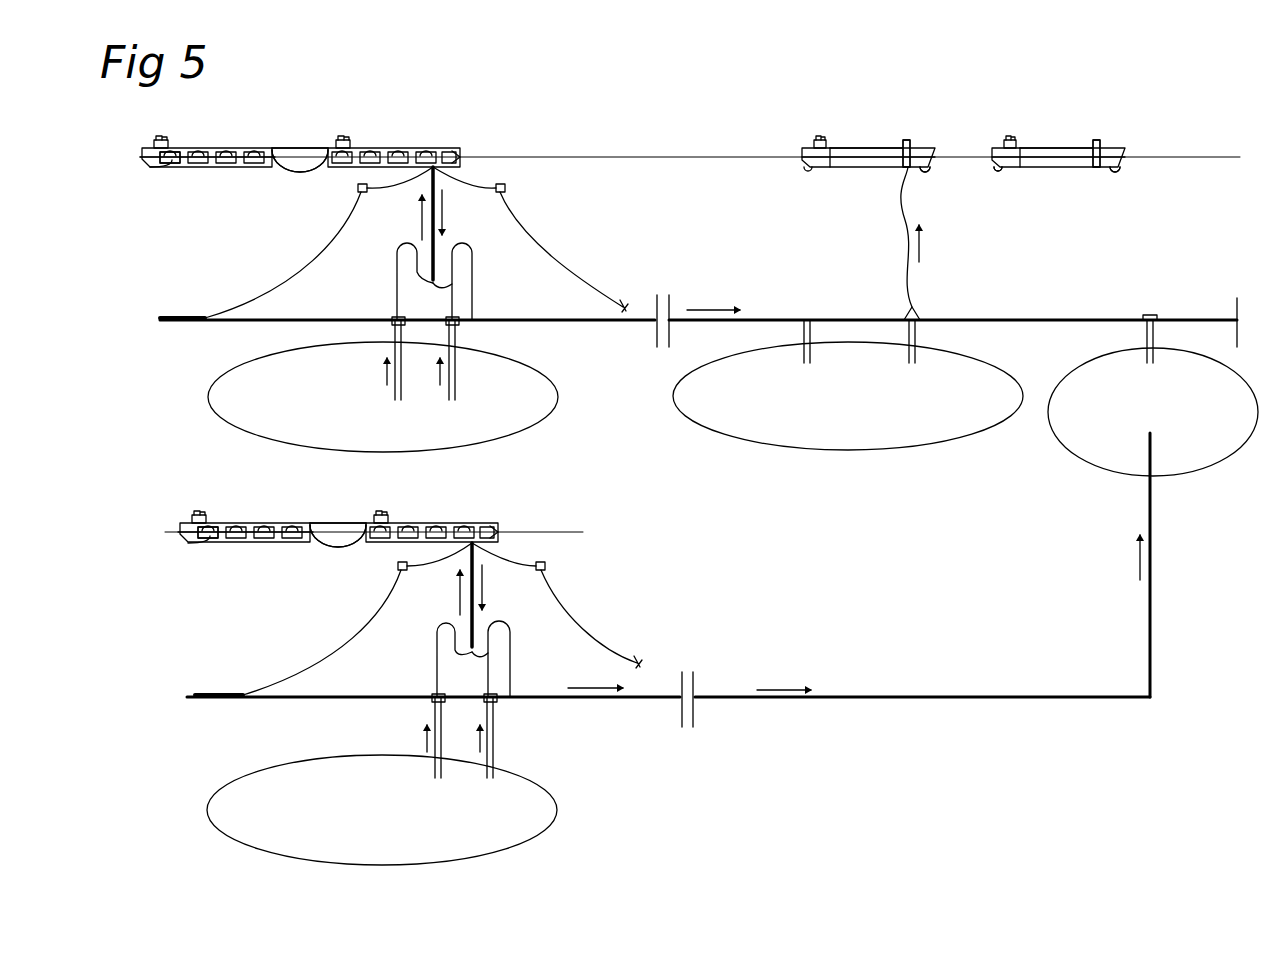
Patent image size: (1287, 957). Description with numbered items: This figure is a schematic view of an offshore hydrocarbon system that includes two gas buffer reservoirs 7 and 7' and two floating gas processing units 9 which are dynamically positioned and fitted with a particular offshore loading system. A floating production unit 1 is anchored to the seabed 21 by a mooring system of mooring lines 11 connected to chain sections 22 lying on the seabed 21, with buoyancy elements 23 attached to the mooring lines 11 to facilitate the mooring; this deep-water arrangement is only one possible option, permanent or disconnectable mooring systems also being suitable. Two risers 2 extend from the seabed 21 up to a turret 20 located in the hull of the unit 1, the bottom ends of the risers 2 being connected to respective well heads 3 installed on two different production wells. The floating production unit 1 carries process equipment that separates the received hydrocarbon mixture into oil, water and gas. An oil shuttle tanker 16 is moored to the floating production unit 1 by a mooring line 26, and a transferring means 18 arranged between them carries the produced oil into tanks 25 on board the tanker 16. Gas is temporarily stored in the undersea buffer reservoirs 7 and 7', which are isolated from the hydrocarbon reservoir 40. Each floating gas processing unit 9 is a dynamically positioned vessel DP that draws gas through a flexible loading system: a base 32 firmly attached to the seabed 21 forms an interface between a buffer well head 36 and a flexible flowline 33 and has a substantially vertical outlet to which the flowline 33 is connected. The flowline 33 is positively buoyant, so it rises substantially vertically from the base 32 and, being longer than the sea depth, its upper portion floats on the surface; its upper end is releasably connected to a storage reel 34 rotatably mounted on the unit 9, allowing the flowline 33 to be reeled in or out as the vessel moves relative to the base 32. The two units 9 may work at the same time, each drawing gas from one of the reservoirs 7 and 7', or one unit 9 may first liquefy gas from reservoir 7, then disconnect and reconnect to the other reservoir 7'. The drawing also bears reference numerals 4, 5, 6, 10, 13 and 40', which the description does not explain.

The floating production unit 1 is at (385, 132).
The riser 2 is at (396, 262).
The well head 3 is at (392, 318).
The hydrocarbon flow 4 is at (420, 220).
The pipeline 5 is at (474, 266).
The return flow 6 is at (444, 218).
The gas buffer reservoir 7 is at (848, 390).
The second gas buffer reservoir 7' is at (1153, 419).
The floating gas processing unit 9 is at (868, 135).
The flow direction 10 is at (921, 250).
The mooring line 11 is at (495, 176).
The hull 13 is at (877, 150).
The oil shuttle tanker 16 is at (193, 148).
The transferring means 18 is at (296, 173).
The turret 20 is at (436, 162).
The seabed 21 is at (335, 318).
The chain section 22 is at (188, 316).
The buoyancy element 23 is at (358, 188).
The tank 25 is at (172, 167).
The mooring line 26 is at (300, 148).
The base 32 is at (920, 310).
The flexible flowline 33 is at (887, 237).
The storage reel 34 is at (912, 143).
The buffer well head 36 is at (1156, 313).
The hydrocarbon reservoir 40 is at (397, 386).
The second reservoir 40' is at (400, 781).
The dynamically positioned vessel DP is at (928, 170).